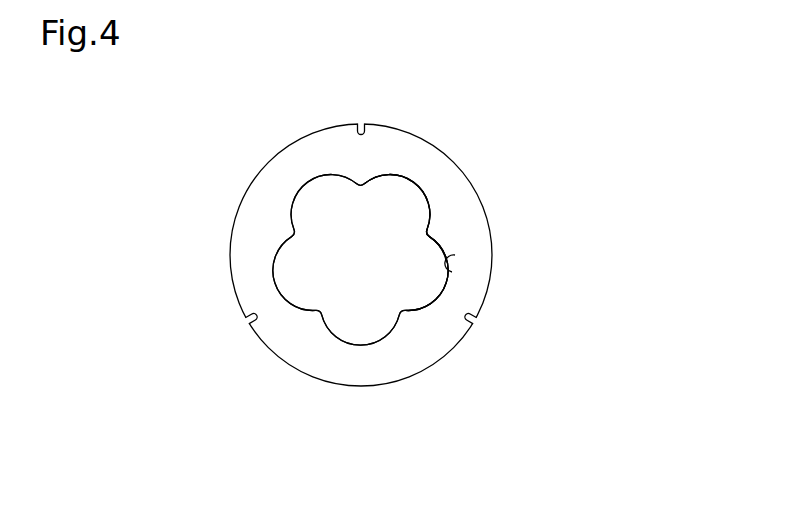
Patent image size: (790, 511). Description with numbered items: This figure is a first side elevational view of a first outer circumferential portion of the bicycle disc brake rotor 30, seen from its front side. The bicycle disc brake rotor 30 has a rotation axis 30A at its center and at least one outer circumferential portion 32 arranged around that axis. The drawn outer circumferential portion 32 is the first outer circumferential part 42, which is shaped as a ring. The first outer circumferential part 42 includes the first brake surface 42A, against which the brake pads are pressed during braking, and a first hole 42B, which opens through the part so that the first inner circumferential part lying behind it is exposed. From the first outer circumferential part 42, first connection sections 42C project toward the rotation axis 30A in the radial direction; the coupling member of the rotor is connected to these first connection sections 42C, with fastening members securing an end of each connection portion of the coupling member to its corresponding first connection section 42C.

The bicycle disc brake rotor 30 is at (671, 126).
The rotation axis 30A is at (365, 253).
The outer circumferential portion 32 is at (622, 211).
The first outer circumferential part 42 is at (570, 198).
The first brake surface 42A is at (473, 226).
The first hole 42B is at (456, 255).
The first connection sections 42C is at (434, 229).